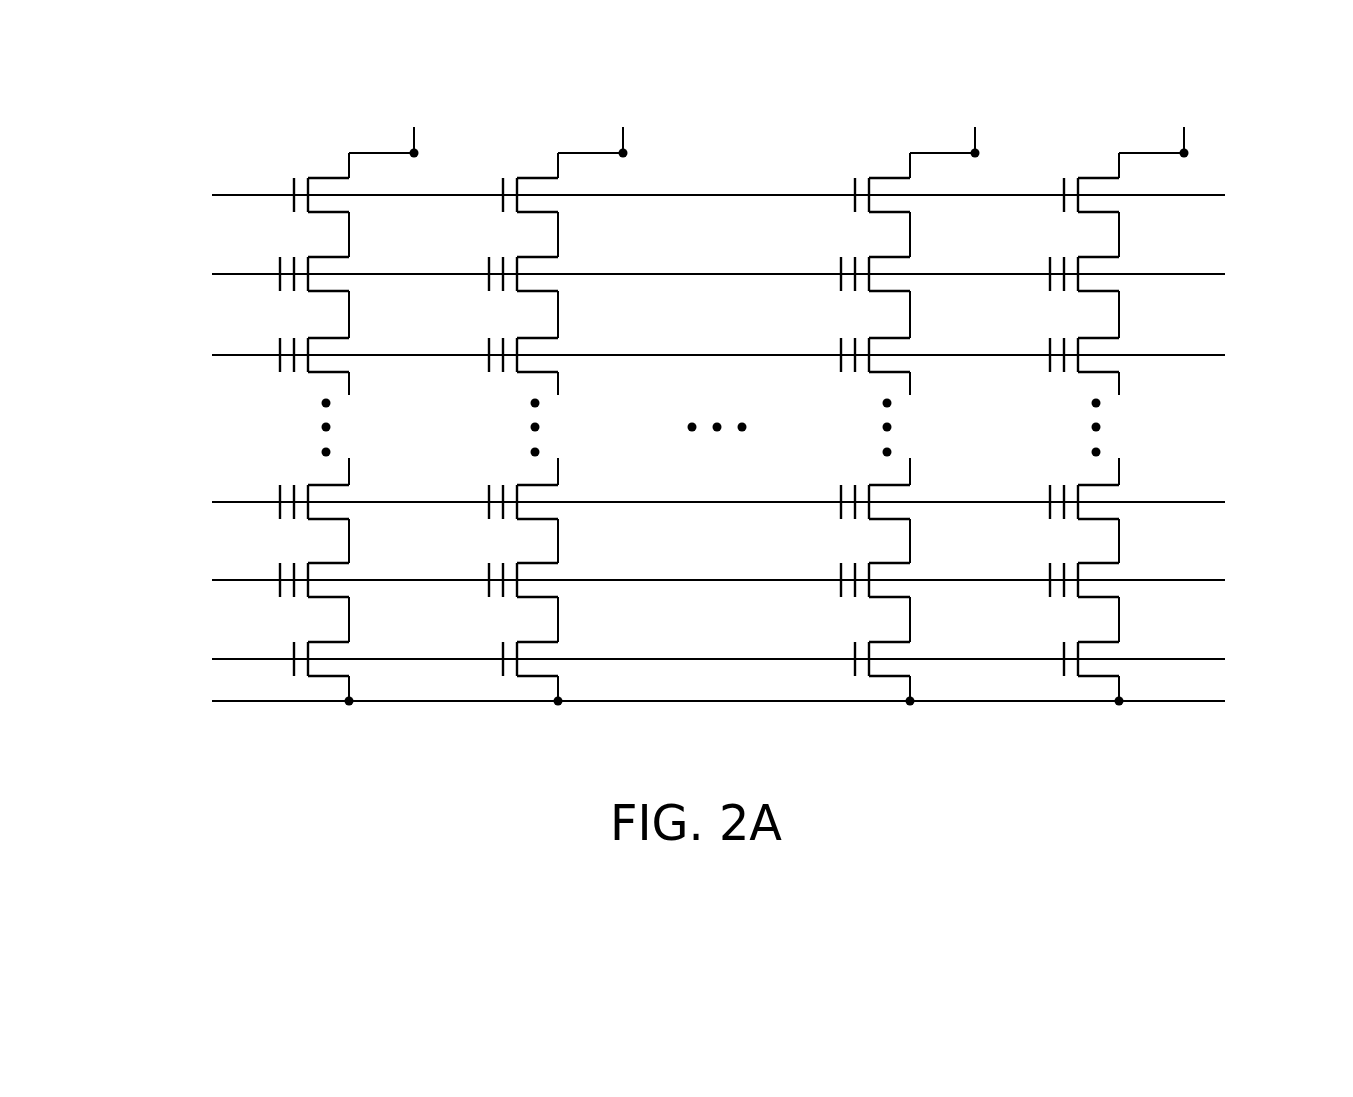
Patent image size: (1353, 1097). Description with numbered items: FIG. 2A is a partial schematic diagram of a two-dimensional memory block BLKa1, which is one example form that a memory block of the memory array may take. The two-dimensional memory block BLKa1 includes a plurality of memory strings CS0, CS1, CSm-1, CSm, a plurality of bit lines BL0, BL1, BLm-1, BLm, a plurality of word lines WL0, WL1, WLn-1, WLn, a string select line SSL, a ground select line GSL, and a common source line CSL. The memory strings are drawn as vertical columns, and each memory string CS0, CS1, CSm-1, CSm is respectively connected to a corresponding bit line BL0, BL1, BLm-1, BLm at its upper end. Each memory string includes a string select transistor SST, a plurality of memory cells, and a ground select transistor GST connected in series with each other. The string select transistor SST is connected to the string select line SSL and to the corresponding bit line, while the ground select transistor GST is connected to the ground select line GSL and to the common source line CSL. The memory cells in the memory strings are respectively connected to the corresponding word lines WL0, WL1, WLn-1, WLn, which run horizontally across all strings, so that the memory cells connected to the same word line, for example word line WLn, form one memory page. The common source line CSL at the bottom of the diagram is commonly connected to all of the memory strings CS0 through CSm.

The 2D memory block BLKa1 is at (1333, 783).
The memory string CS0 is at (317, 379).
The memory string CS1 is at (526, 379).
The memory string CSm-1 is at (878, 379).
The memory string CSm is at (1087, 379).
The bit line BL0 is at (393, 124).
The bit line BL1 is at (603, 124).
The bit line BLm-1 is at (957, 124).
The bit line BLm is at (1166, 124).
The string select line SSL is at (689, 197).
The string select transistor SST is at (268, 222).
The word line WLn is at (689, 275).
The word line WLn-1 is at (682, 359).
The word line WL1 is at (690, 504).
The word line WL0 is at (690, 582).
The ground select line GSL is at (689, 660).
The ground select transistor GST is at (271, 677).
The common source line CSL is at (689, 702).